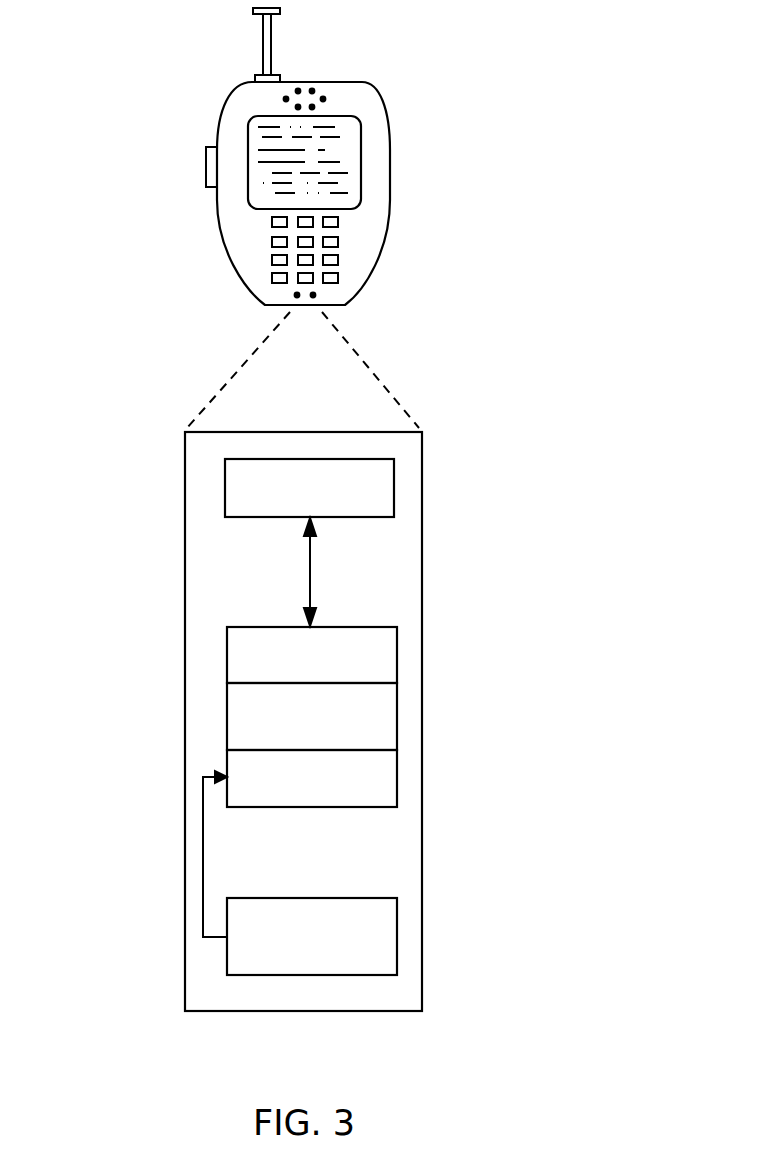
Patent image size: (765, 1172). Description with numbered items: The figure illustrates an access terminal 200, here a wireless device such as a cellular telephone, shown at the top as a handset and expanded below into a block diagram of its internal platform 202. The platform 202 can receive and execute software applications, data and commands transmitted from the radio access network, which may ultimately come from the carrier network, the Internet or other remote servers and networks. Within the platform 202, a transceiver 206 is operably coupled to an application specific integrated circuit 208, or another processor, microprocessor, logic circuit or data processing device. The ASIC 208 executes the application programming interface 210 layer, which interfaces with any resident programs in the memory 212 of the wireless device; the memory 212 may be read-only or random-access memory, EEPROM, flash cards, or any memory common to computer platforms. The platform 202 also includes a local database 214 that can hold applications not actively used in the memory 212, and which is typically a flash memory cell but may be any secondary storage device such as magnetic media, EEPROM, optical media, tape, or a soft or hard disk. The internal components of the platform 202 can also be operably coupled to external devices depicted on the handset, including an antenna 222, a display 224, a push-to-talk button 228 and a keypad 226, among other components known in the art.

The access terminal 200 is at (370, 283).
The platform 202 is at (185, 627).
The transceiver 206 is at (394, 488).
The application specific integrated circuit 208 is at (397, 663).
The application programming interface 210 is at (397, 710).
The memory 212 is at (397, 777).
The local database 214 is at (397, 919).
The antenna 222 is at (272, 24).
The display 224 is at (361, 147).
The keypad 226 is at (338, 241).
The push-to-talk button 228 is at (206, 160).